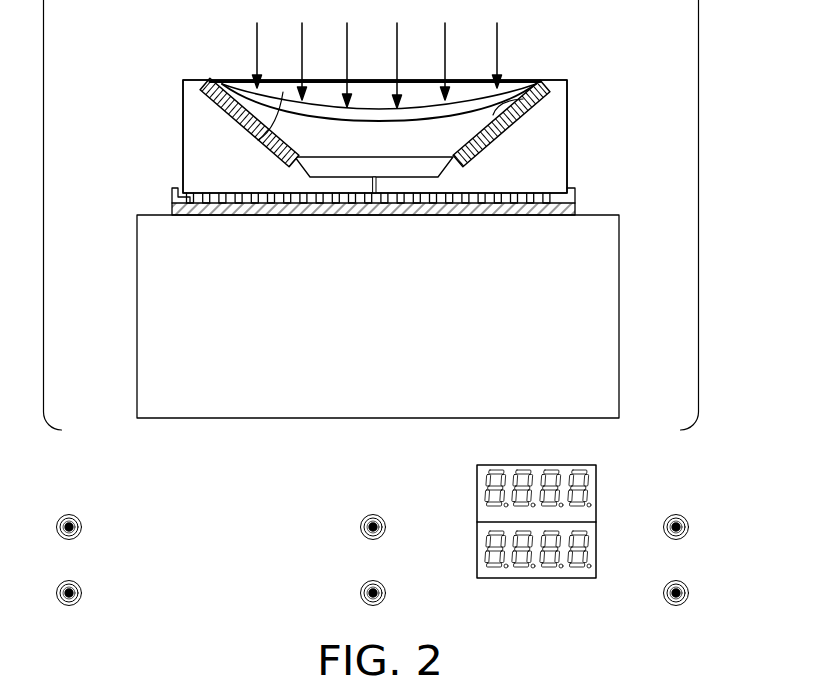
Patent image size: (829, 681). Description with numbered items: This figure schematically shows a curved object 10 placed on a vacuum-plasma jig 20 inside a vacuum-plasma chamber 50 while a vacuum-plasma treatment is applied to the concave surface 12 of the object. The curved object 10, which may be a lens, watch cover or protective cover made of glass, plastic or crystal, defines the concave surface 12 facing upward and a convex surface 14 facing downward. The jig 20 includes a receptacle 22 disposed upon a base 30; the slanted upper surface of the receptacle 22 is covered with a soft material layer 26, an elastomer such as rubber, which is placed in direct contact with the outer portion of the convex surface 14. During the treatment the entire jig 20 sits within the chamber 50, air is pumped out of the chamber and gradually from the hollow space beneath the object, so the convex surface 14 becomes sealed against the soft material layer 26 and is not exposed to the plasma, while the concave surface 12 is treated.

The curved object 10 is at (515, 82).
The concave surface 12 is at (246, 89).
The convex surface 14 is at (260, 140).
The vacuum-plasma jig 20 is at (574, 66).
The receptacle 22 is at (553, 152).
The soft material layer 26 is at (553, 108).
The base 30 is at (562, 208).
The vacuum-plasma chamber 50 is at (708, 193).